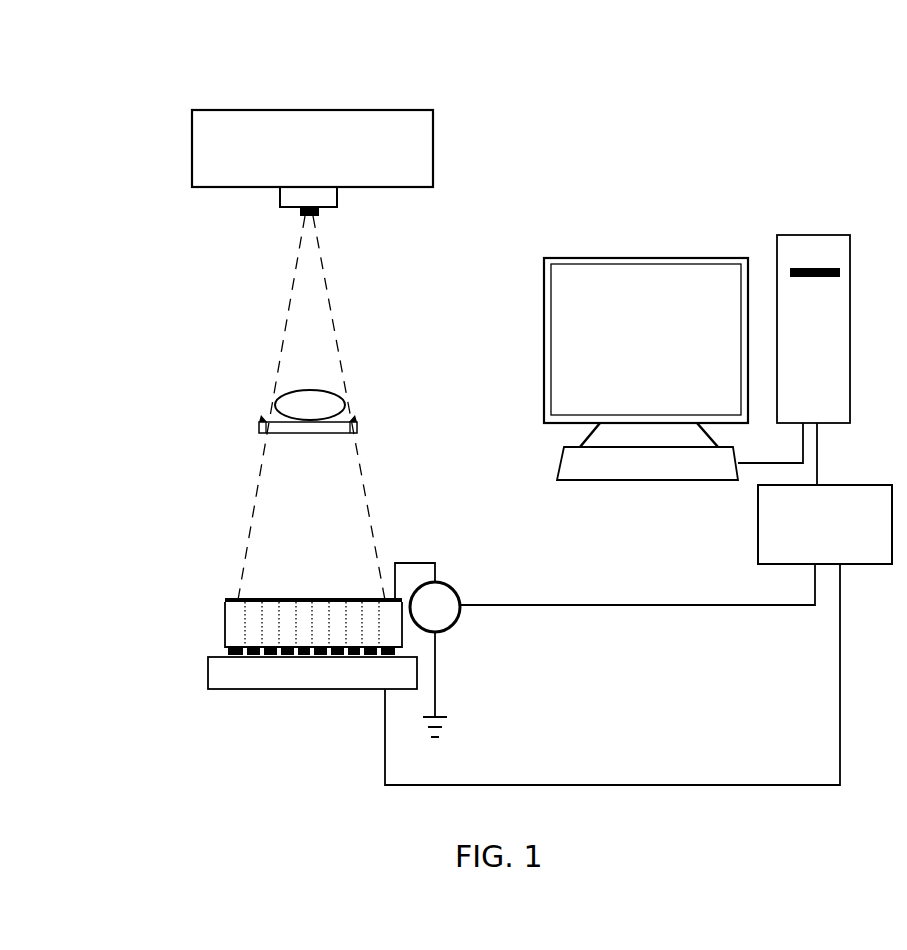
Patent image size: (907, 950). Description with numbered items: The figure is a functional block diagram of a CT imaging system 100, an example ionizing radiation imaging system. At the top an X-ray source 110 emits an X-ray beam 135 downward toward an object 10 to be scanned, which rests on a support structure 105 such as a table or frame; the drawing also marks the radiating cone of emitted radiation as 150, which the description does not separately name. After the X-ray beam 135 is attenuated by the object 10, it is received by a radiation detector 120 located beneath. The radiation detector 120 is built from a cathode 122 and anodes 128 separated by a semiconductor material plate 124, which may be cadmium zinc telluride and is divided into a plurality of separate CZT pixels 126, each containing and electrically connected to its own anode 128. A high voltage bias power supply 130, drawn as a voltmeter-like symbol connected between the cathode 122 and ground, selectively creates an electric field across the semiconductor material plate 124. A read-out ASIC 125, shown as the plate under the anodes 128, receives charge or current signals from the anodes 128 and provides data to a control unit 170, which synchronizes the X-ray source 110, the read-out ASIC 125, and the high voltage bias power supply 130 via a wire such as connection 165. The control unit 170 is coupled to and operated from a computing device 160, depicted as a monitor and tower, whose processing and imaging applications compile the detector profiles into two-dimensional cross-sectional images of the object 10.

The CT imaging system 100 is at (731, 77).
The X-ray source 110 is at (312, 163).
The light beam 150 is at (318, 323).
The object 10 is at (290, 395).
The support structure 105 is at (357, 428).
The X-ray beam 135 is at (311, 510).
The computing device 160 is at (697, 360).
The control unit 170 is at (825, 524).
The connection 165 is at (697, 607).
The radiation detector 120 is at (241, 590).
The cathode 122 is at (225, 598).
The semiconductor material plate 124 is at (225, 630).
The CZT pixels 126 is at (254, 608).
The anode 128 is at (218, 650).
The read-out application specific integrated circuit (ASIC) 125 is at (338, 690).
The high voltage bias power supply 130 is at (455, 622).